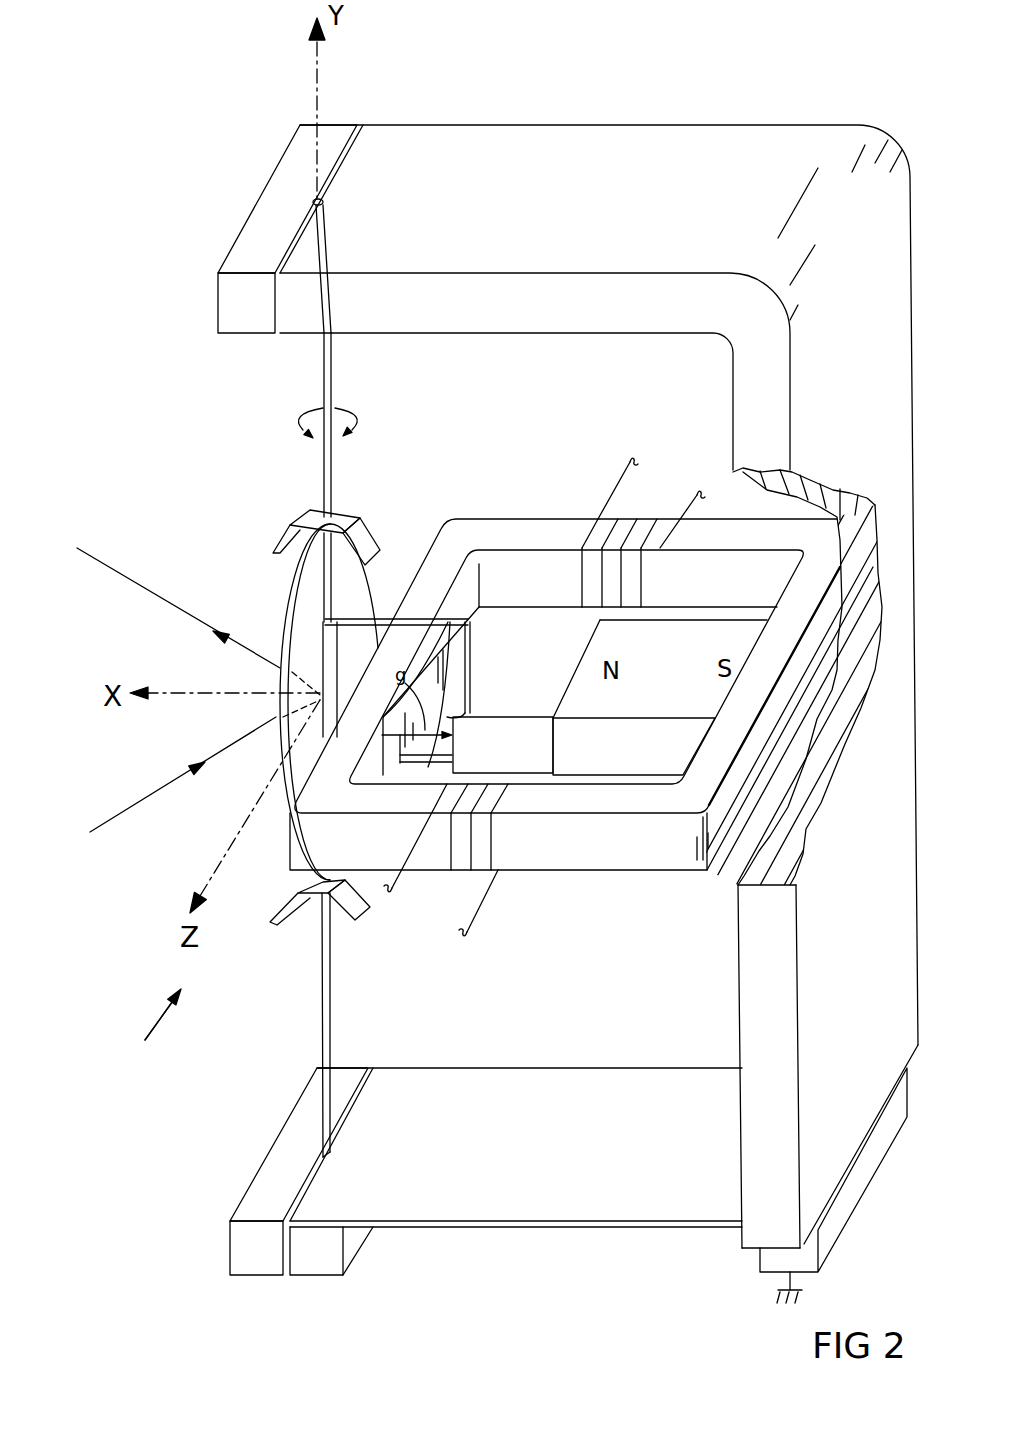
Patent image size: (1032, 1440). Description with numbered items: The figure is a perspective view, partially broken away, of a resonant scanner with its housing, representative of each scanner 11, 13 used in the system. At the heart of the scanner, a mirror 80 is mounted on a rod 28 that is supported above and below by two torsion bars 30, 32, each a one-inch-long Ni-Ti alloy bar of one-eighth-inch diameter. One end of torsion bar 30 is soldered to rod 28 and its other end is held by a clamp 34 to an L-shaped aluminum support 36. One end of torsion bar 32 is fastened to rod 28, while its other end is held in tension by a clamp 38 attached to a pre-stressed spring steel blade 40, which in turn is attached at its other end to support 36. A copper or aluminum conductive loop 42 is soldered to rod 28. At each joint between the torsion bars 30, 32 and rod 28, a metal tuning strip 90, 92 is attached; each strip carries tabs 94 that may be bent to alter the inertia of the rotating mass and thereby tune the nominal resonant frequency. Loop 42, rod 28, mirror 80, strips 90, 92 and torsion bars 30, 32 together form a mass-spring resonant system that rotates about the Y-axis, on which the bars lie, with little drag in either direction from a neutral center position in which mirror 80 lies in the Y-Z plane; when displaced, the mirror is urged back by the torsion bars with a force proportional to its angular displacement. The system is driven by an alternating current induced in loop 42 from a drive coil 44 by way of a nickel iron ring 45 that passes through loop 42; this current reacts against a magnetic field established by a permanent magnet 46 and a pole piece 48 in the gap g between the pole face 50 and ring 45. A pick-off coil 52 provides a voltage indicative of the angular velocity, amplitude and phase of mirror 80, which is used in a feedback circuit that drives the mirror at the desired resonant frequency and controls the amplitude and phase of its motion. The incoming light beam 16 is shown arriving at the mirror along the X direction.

The scanner 11 is at (129, 1030).
The scanner 13 is at (160, 1019).
The light beam 16 is at (170, 784).
The rod 28 is at (335, 602).
The torsion bar 30 is at (332, 382).
The torsion bar 32 is at (331, 978).
The clamp 34 is at (275, 172).
The L-shaped aluminum support 36 is at (580, 128).
The clamp 38 is at (298, 1095).
The pre-stressed spring steel blade 40 is at (552, 1078).
The conductive loop 42 is at (472, 652).
The drive coil 44 is at (627, 522).
The nickel iron ring 45 is at (502, 529).
The permanent magnet 46 is at (676, 682).
The pole piece 48 is at (516, 761).
The pole face 50 is at (487, 676).
The pick-off coil 52 is at (473, 870).
The mirror 80 is at (285, 613).
The metal tuning strip 90 is at (290, 506).
The metal tuning strip 92 is at (284, 890).
The tabs 94 is at (273, 918).